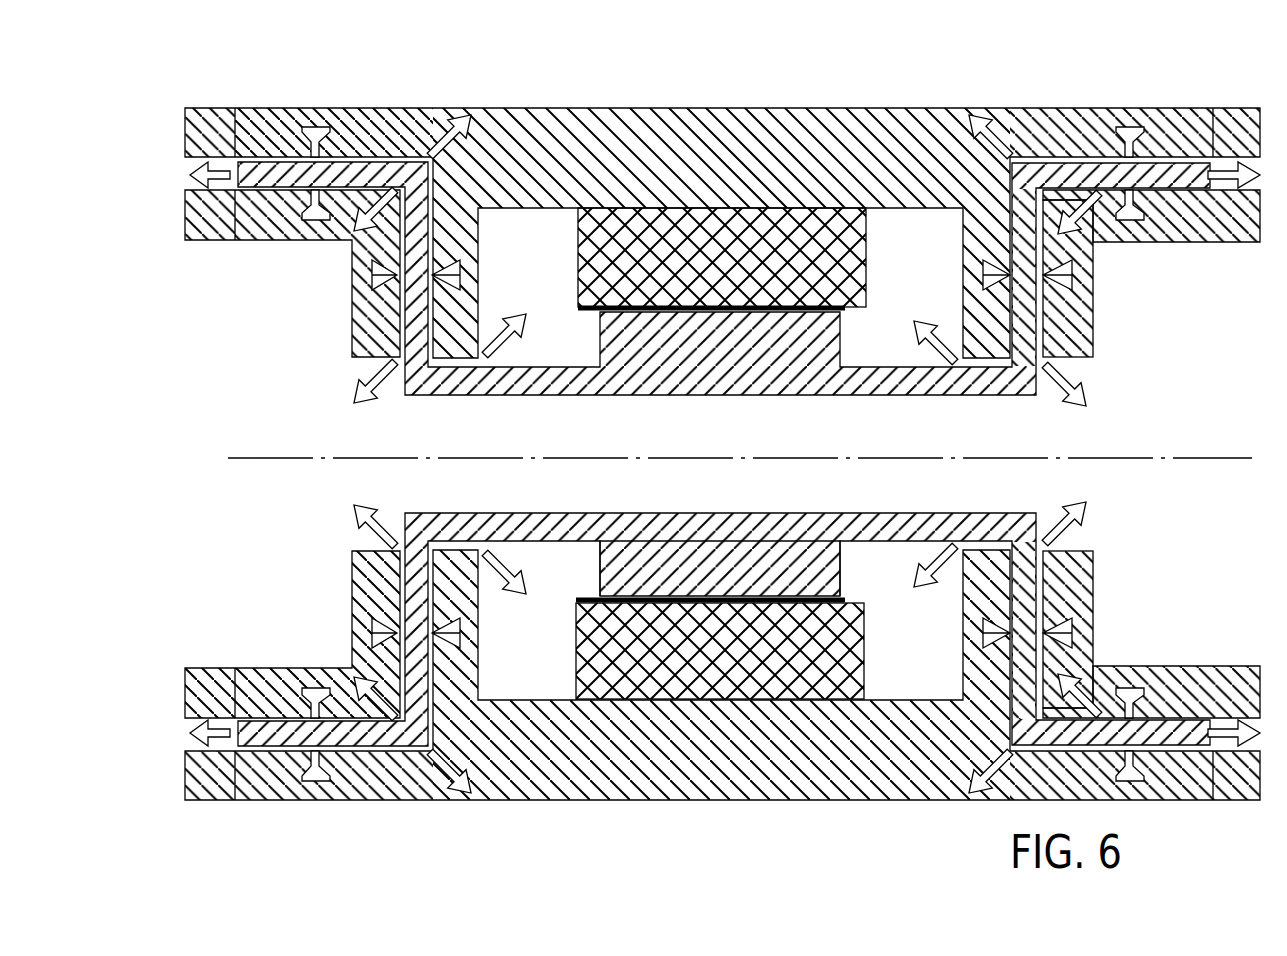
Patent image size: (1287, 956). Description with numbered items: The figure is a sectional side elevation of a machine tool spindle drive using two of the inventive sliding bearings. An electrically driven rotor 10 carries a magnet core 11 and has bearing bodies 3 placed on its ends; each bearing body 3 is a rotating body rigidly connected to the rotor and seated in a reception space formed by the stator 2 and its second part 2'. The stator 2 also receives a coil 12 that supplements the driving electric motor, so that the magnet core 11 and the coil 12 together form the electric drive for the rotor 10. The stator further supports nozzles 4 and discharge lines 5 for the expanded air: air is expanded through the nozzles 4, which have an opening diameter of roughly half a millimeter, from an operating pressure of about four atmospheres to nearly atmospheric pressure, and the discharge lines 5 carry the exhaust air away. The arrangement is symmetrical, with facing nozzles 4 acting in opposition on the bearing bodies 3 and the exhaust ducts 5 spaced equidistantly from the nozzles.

The stator 2 is at (731, 412).
The stator part 2' is at (1135, 454).
The bearing body 3 is at (987, 508).
The nozzle 4 is at (372, 278).
The discharge line 5 is at (1010, 152).
The rotor 10 is at (908, 386).
The magnet core 11 is at (650, 568).
The coil 12 is at (625, 243).